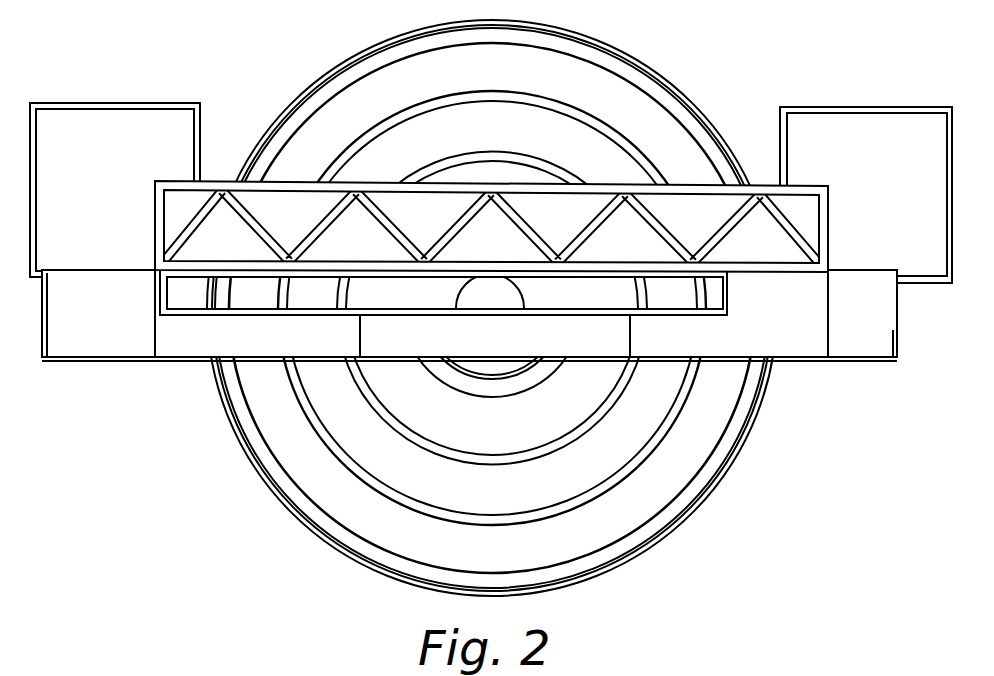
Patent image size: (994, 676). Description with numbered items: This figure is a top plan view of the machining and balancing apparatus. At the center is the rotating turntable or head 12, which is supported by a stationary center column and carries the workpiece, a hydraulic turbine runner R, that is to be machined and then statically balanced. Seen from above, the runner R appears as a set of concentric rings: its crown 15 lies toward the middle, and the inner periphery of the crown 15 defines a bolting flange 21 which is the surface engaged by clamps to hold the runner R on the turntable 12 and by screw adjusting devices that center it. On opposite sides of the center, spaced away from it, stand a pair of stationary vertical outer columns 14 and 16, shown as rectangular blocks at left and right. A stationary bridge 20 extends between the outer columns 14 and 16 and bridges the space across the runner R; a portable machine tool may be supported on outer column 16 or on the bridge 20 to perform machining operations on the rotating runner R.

The turntable 12 is at (548, 297).
The outer column 14 is at (126, 151).
The crown 15 is at (410, 487).
The outer column 16 is at (905, 155).
The stationary bridge 20 is at (590, 187).
The bolting flange 21 is at (459, 383).
The runner R is at (262, 452).